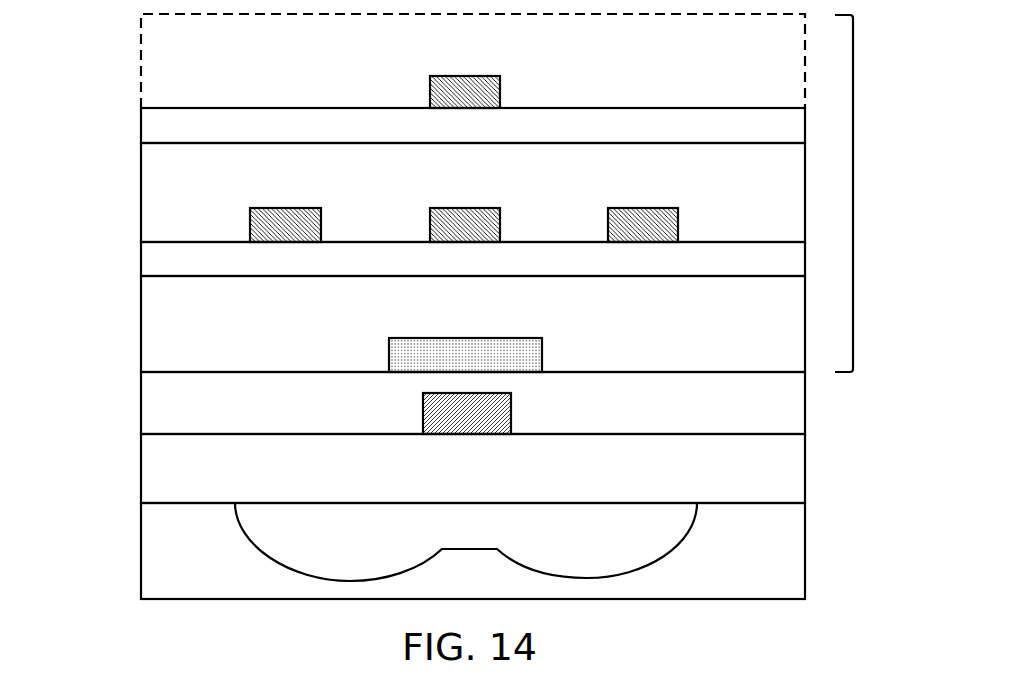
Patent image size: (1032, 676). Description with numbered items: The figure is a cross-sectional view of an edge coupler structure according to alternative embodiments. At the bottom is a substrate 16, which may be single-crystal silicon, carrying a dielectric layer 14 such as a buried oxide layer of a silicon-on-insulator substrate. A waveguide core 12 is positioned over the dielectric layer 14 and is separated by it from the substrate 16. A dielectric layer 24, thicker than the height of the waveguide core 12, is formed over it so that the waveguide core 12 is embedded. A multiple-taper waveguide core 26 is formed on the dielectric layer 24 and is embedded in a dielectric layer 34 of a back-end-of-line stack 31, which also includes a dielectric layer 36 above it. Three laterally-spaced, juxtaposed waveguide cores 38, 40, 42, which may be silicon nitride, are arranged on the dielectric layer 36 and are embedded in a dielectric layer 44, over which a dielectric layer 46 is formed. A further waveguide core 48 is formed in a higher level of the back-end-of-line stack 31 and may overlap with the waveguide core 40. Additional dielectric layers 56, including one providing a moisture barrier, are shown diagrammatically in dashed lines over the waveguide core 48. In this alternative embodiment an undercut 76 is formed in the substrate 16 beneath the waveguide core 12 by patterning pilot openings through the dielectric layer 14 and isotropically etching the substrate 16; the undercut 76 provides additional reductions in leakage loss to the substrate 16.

The waveguide core 12 is at (478, 414).
The dielectric layer 14 is at (757, 480).
The substrate 16 is at (767, 548).
The dielectric layer 24 is at (182, 404).
The multiple-taper waveguide core 26 is at (505, 360).
The back-end-of-line stack 31 is at (853, 193).
The dielectric layer 34 is at (182, 340).
The dielectric layer 36 is at (182, 263).
The waveguide core 38 is at (292, 228).
The waveguide core 40 is at (470, 228).
The waveguide core 42 is at (658, 226).
The dielectric layer 44 is at (182, 207).
The dielectric layer 46 is at (182, 131).
The waveguide core 48 is at (470, 95).
The dielectric layers 56 is at (182, 64).
The undercut 76 is at (483, 532).